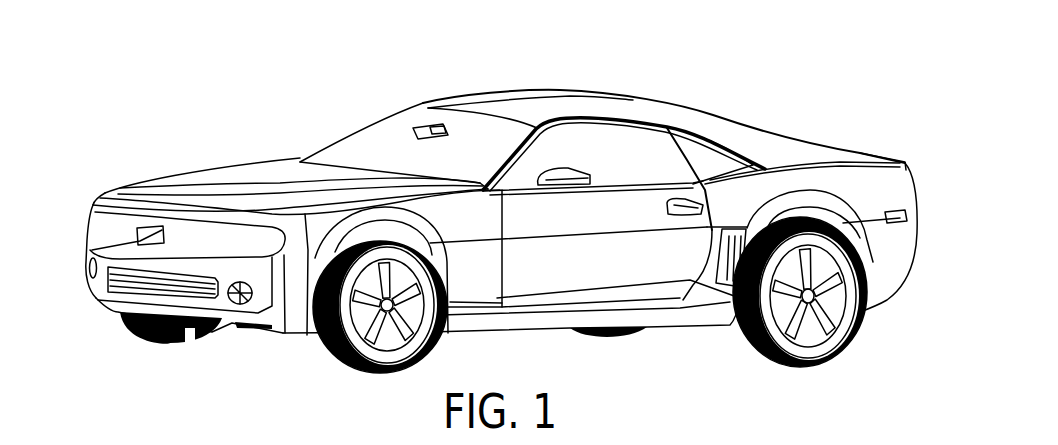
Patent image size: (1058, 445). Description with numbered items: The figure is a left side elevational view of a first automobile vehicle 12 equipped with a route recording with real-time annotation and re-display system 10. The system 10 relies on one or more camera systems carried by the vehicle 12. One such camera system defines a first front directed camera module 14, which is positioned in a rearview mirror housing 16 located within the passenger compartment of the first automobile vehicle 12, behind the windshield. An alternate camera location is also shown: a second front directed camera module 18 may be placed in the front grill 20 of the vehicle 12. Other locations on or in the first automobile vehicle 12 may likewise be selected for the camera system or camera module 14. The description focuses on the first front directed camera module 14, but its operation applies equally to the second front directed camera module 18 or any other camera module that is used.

The route recording with real-time annotation and re-display system 10 is at (766, 95).
The first automobile vehicle 12 is at (899, 227).
The first front directed camera module 14 is at (413, 130).
The rearview mirror housing 16 is at (438, 123).
The second front directed camera module 18 is at (92, 255).
The front grill 20 is at (93, 209).